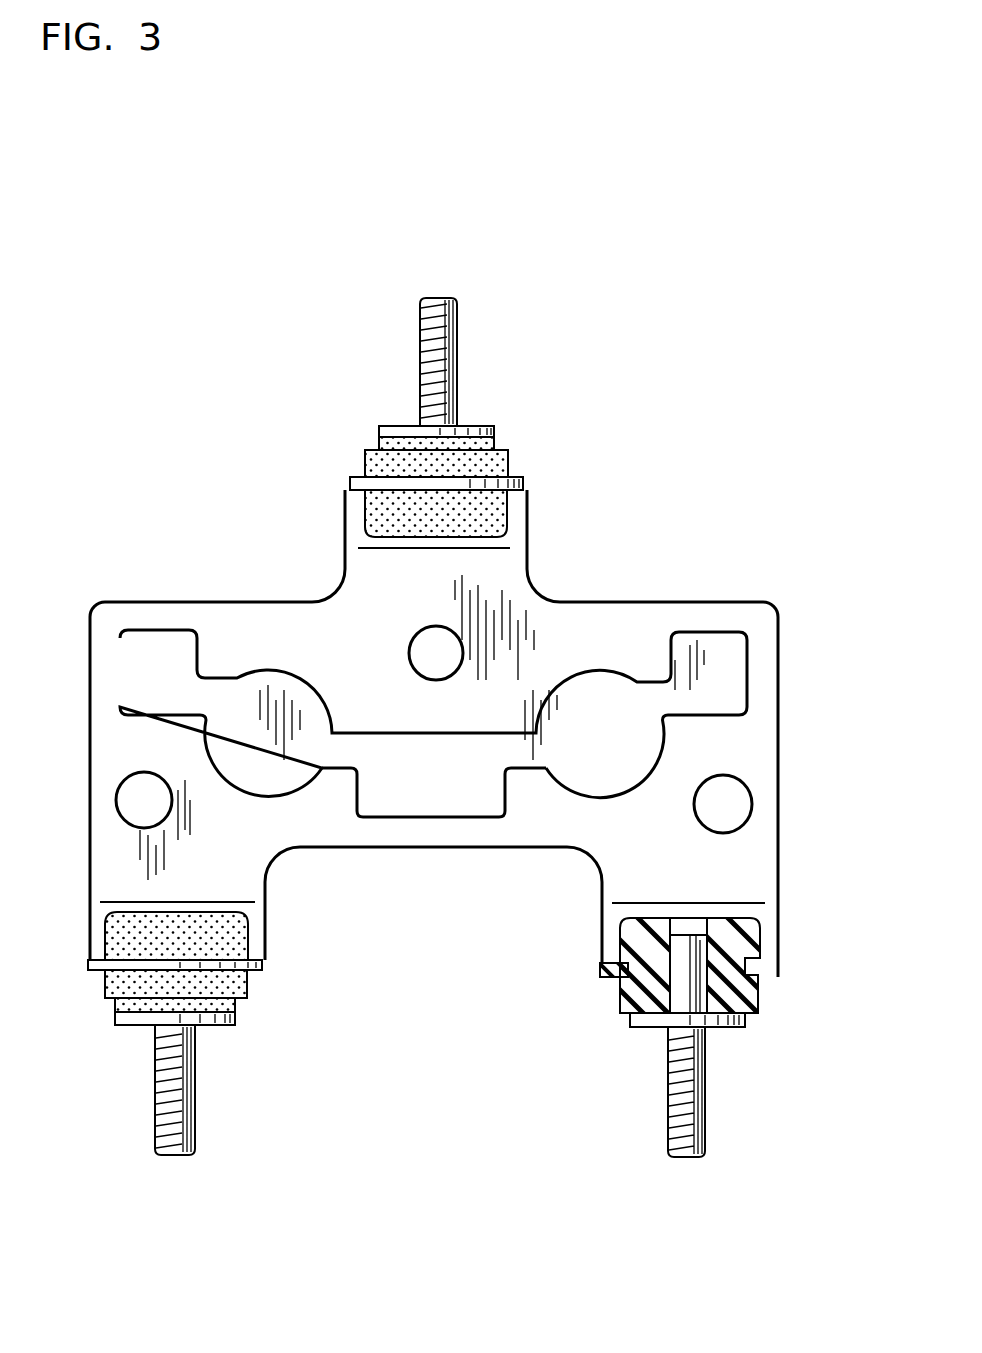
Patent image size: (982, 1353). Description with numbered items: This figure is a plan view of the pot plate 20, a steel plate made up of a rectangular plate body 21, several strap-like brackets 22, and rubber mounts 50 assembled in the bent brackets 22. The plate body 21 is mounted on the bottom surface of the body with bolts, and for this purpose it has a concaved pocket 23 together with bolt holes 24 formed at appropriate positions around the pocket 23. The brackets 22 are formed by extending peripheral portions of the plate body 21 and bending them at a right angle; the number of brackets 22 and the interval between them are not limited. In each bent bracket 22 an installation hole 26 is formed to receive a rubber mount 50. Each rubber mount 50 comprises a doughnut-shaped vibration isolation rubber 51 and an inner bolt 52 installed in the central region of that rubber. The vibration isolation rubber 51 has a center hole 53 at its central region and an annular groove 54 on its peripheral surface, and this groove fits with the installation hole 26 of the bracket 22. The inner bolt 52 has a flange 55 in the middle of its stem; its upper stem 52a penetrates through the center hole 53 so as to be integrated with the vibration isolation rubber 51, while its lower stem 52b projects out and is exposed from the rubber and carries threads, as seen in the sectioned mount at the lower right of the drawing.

The pot plate 20 is at (436, 773).
The plate body 21 is at (748, 740).
The bracket 22 is at (352, 483).
The pocket 23 is at (430, 805).
The bolt hole 24 is at (430, 648).
The installation hole 26 is at (647, 975).
The rubber mount 50 is at (422, 727).
The vibration isolation rubber 51 is at (118, 940).
The inner bolt 52 is at (156, 1095).
The upper stem 52a is at (680, 950).
The lower stem 52b is at (706, 1105).
The center hole 53 is at (700, 966).
The annular groove 54 is at (752, 972).
The flange 55 is at (730, 1030).